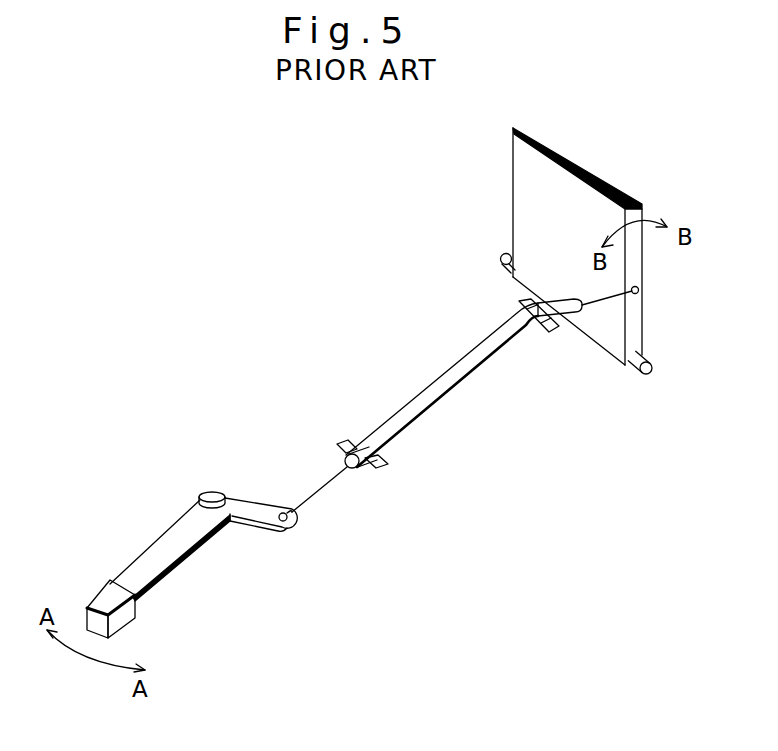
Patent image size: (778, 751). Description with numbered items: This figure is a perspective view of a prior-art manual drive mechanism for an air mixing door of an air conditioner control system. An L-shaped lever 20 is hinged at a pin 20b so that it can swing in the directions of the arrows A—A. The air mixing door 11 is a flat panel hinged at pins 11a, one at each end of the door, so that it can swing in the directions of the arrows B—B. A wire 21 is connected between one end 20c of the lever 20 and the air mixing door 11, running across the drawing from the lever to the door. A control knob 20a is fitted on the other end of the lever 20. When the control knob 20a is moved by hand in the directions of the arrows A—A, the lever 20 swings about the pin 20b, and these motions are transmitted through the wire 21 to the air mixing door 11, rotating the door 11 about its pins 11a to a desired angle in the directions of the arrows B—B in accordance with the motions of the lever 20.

The air mixing door 11 is at (521, 153).
The pins 11a is at (500, 261).
The L-shaped lever 20 is at (175, 540).
The control knob 20a is at (122, 621).
The pin 20b is at (213, 492).
The one end 20c is at (288, 533).
The wire 21 is at (325, 485).